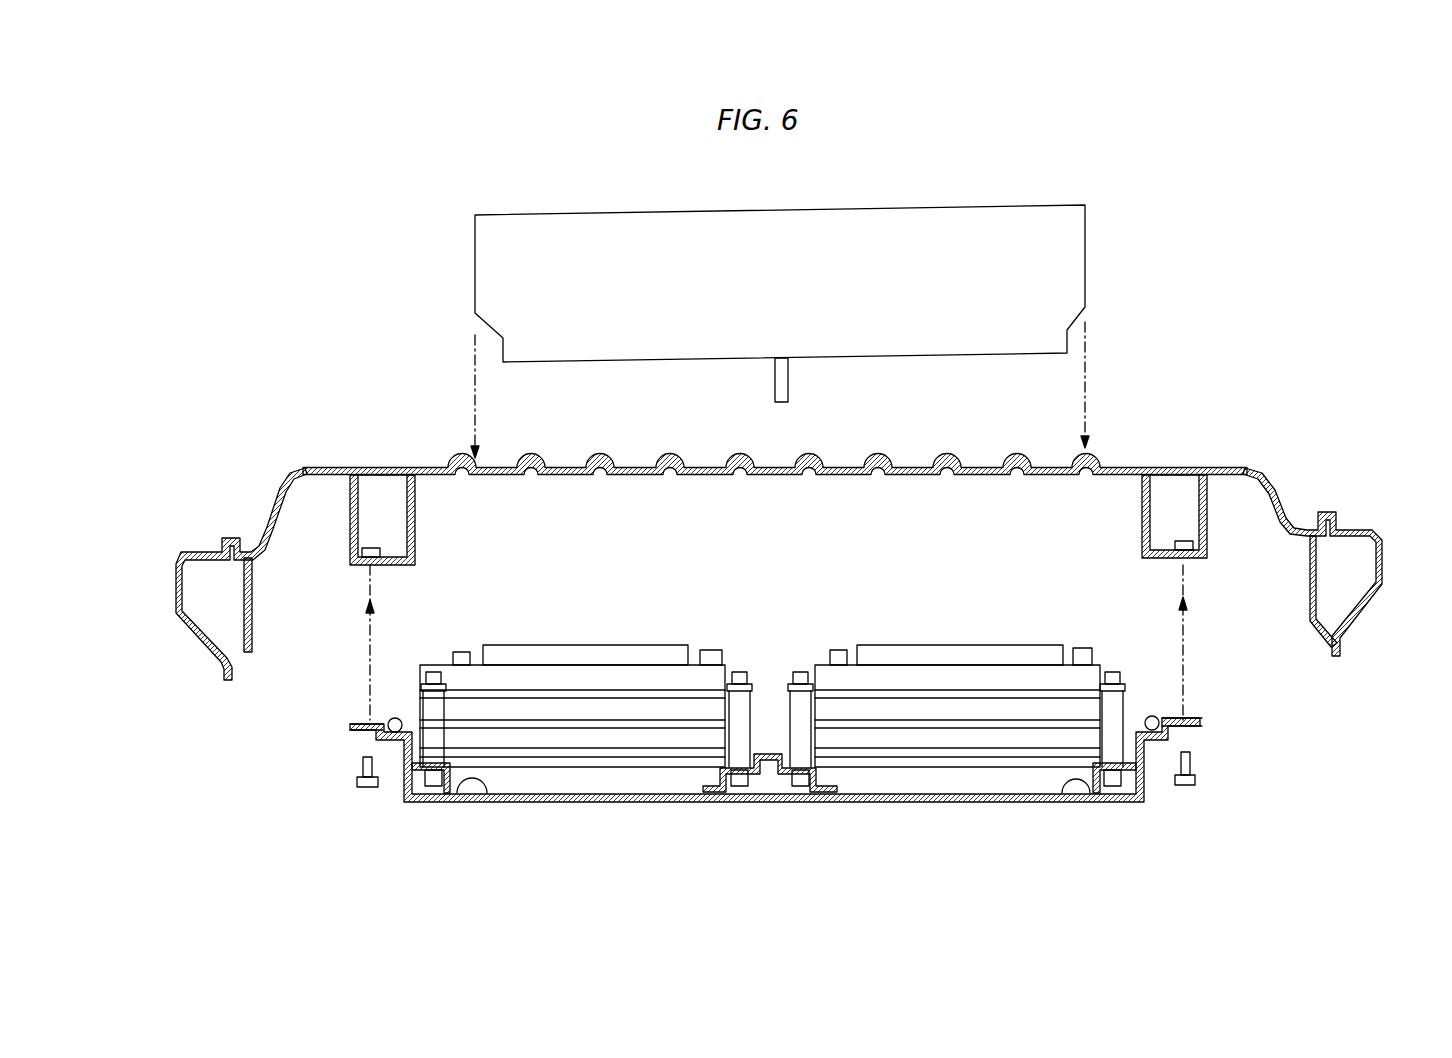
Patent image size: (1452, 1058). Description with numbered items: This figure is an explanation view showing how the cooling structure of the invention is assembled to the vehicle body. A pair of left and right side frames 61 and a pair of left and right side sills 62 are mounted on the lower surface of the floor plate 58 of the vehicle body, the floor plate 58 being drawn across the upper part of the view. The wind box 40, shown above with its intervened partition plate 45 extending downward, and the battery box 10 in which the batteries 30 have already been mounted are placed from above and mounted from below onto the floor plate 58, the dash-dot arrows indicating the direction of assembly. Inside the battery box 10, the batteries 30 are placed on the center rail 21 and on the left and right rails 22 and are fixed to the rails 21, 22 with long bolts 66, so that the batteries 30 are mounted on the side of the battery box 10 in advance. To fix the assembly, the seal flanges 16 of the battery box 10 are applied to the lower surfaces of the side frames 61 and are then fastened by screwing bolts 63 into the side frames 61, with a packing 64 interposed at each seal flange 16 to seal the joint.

The battery box 10 is at (917, 805).
The seal flange 16 is at (350, 726).
The center rail 21 is at (772, 778).
The rail 22 is at (478, 803).
The battery 30 is at (582, 645).
The wind box 40 is at (1085, 242).
The intervened partition plate 45 is at (790, 375).
The floor plate 58 is at (850, 476).
The side frame 61 is at (347, 538).
The side sill 62 is at (197, 640).
The bolt 63 is at (367, 790).
The packing 64 is at (385, 720).
The long bolt 66 is at (435, 672).